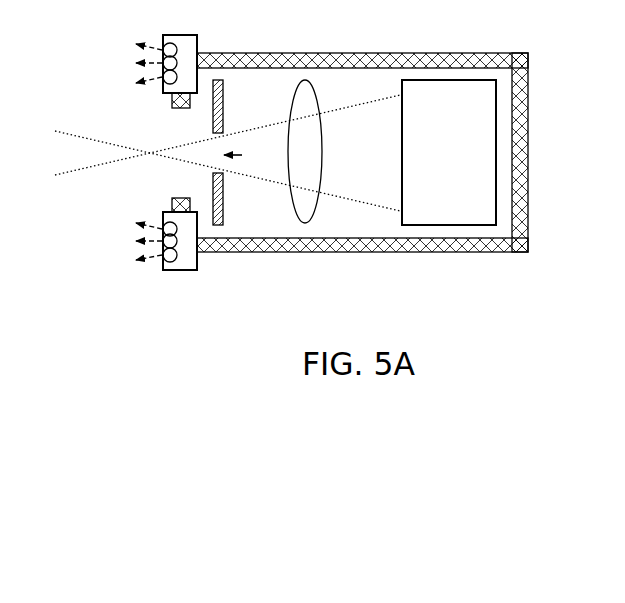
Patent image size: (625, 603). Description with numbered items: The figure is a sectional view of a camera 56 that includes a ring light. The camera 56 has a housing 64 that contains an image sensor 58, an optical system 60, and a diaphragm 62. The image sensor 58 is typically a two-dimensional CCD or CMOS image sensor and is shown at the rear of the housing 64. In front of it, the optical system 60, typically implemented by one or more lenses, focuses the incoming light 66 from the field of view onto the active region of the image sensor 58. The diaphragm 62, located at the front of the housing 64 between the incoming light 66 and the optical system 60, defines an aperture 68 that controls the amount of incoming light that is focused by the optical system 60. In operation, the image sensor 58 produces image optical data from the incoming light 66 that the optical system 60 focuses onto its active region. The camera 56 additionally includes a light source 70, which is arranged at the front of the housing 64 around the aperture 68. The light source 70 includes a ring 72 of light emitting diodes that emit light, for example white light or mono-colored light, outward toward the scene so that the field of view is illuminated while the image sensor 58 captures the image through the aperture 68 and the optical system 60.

The camera 56 is at (308, 152).
The image sensor 58 is at (402, 163).
The optical system 60 is at (313, 212).
The diaphragm 62 is at (222, 102).
The housing 64 is at (435, 252).
The incoming light 66 is at (99, 165).
The aperture 68 is at (251, 157).
The light source 70 is at (182, 35).
The ring 72 is at (170, 257).